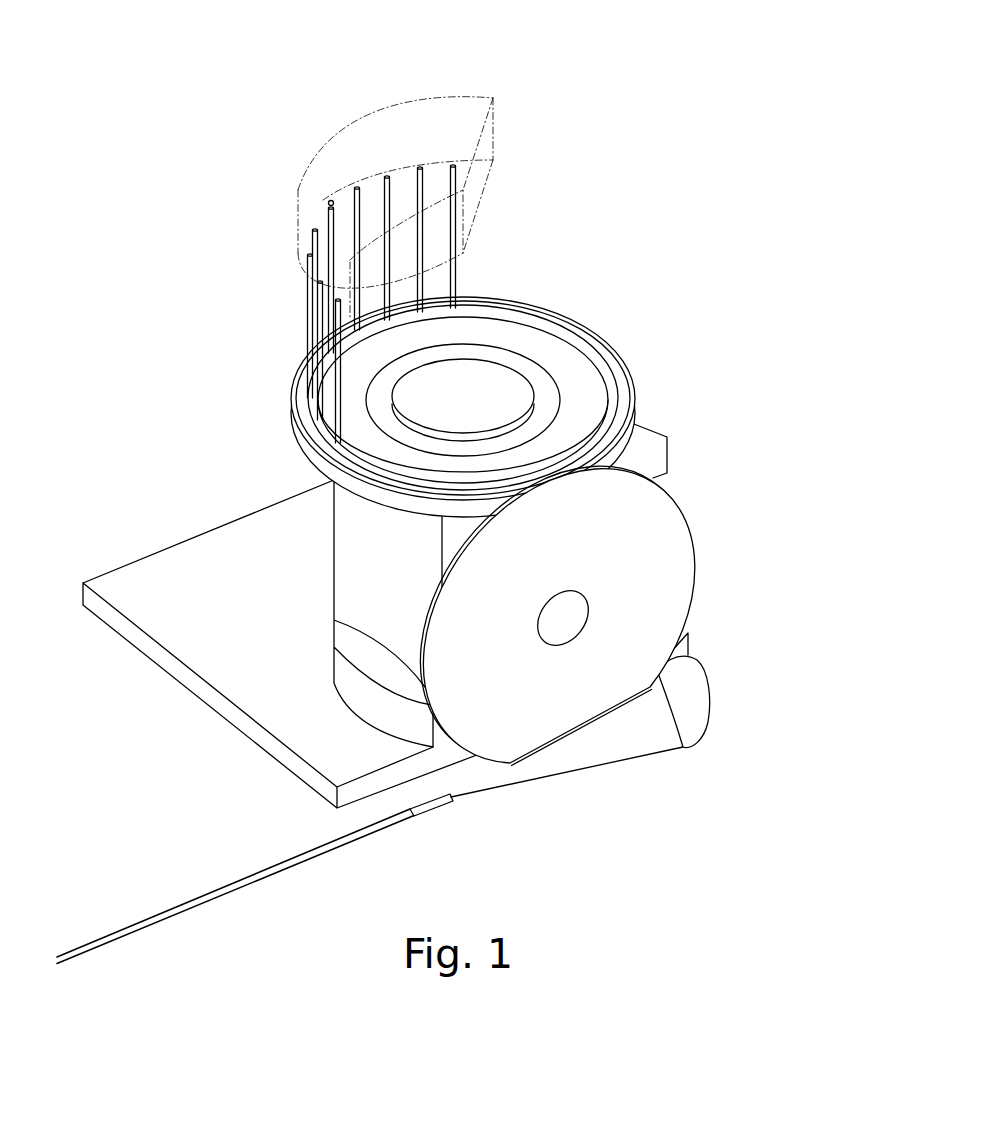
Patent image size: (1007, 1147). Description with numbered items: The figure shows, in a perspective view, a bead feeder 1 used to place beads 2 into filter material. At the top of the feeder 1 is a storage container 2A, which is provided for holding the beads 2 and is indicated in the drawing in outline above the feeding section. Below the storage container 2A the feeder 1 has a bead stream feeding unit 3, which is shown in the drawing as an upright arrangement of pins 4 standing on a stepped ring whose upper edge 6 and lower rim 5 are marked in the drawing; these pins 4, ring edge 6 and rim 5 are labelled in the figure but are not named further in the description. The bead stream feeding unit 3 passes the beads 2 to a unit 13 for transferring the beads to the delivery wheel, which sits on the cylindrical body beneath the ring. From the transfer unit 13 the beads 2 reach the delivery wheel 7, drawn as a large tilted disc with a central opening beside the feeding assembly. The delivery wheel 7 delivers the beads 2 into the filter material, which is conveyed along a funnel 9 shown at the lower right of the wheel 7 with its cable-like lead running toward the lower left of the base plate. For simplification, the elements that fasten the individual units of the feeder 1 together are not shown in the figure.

The feeder 1 is at (401, 486).
The beads 2 is at (327, 200).
The storage container 2A is at (460, 108).
The bead stream feeding unit 3 is at (406, 254).
The electrode pins 4 is at (329, 246).
The carrier ring lower rim 5 is at (303, 440).
The carrier ring 6 is at (302, 400).
The delivery wheel 7 is at (637, 527).
The funnel 9 is at (637, 742).
The unit for transferring the beads to a delivery wheel 13 is at (384, 377).